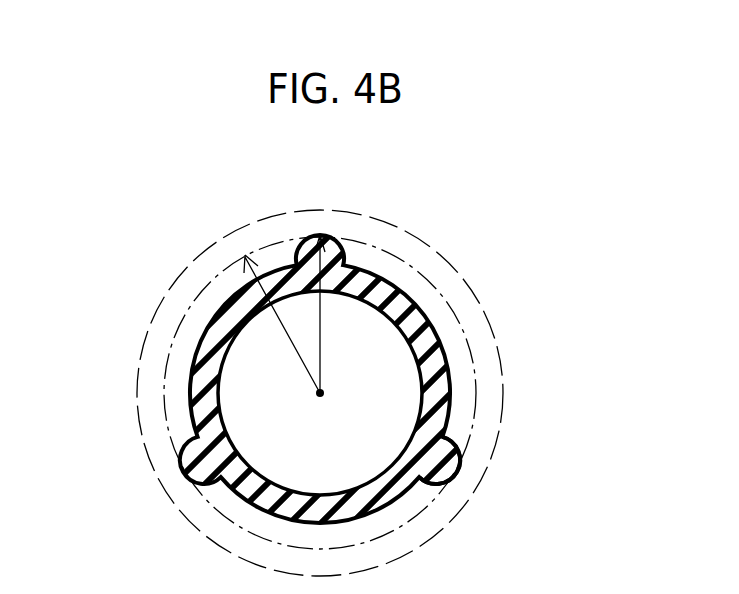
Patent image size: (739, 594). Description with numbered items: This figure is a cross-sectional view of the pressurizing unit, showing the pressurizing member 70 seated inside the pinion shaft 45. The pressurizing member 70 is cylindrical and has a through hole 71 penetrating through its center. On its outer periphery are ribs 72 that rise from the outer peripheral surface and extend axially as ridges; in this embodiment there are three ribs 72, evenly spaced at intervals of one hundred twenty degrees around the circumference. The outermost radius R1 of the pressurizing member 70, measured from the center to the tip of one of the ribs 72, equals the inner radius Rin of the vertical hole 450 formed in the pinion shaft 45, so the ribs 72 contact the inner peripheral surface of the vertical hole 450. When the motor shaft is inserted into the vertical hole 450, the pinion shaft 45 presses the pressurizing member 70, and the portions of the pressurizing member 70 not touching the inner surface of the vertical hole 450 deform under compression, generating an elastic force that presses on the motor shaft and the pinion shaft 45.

The pinion shaft 45 is at (395, 218).
The vertical hole 450 is at (445, 306).
The pressurizing member 70 is at (437, 347).
The through hole 71 is at (420, 380).
The ribs 72 is at (452, 447).
The radius R1 is at (322, 335).
The radius Rin is at (295, 350).